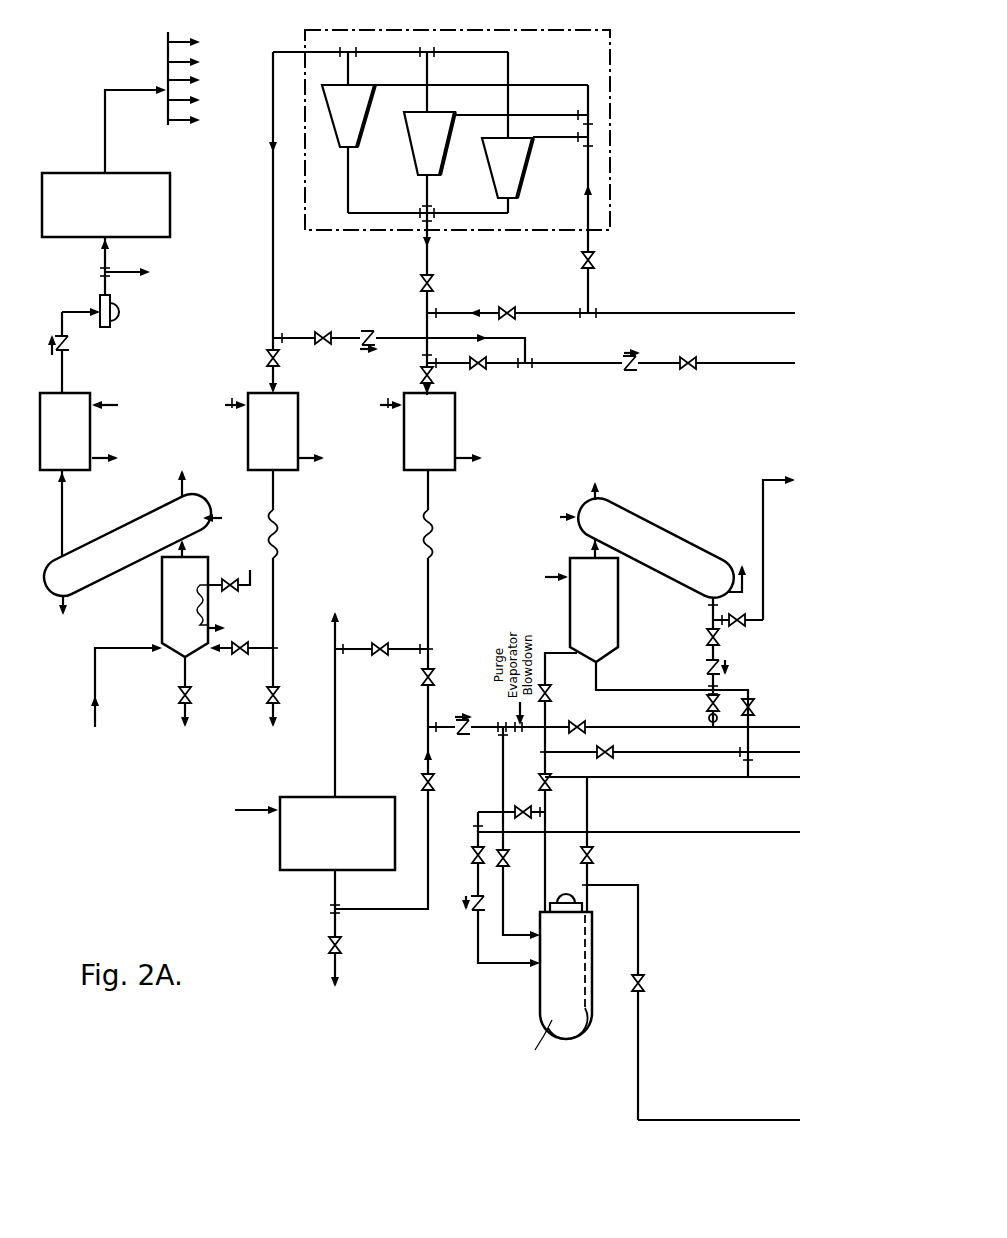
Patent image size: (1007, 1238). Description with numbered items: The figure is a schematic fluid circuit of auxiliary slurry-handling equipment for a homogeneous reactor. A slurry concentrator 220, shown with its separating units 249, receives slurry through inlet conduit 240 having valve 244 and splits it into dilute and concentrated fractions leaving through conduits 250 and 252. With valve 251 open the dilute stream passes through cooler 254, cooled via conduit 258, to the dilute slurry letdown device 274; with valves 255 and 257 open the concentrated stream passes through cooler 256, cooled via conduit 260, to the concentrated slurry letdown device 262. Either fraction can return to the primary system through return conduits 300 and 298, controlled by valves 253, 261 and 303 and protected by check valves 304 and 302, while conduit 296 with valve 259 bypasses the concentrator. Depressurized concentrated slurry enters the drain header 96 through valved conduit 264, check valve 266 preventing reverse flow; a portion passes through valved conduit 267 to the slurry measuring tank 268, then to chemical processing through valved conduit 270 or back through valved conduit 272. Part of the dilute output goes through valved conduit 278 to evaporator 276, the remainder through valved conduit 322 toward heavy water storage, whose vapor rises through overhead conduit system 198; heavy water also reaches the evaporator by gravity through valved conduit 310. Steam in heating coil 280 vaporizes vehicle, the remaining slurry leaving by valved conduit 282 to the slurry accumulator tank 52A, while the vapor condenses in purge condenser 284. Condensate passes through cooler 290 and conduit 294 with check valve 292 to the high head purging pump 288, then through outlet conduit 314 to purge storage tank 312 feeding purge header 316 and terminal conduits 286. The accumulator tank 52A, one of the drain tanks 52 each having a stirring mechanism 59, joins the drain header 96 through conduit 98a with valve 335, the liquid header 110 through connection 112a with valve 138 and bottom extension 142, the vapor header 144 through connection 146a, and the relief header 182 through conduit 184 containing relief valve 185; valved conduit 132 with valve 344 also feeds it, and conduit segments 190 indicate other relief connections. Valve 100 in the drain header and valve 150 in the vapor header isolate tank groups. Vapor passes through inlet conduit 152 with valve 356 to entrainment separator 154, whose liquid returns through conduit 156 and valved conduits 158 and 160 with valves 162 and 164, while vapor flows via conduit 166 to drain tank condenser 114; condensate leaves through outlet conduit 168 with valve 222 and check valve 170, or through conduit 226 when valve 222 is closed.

The purge header 316 is at (166, 42).
The terminal conduits 286 is at (185, 60).
The purge storage tank 312 is at (170, 186).
The outlet conduit 314 is at (104, 266).
The conduit segments 190 is at (110, 272).
The high head purging pump 288 is at (119, 322).
The check valve 292 is at (70, 343).
The conduit 294 is at (64, 297).
The cooler 290 is at (92, 437).
The purge condenser 284 is at (100, 540).
The evaporator 276 is at (162, 597).
The heating coil 280 is at (240, 589).
The valved conduit 278 is at (262, 652).
The valved conduit 282 is at (184, 671).
The valved conduit 310 is at (95, 672).
The valved conduit 322 is at (276, 664).
The overhead conduit system 198 is at (286, 755).
The slurry concentrator 220 is at (610, 74).
The evaporator stage 249 is at (427, 132).
The valved conduit 240 is at (590, 216).
The conduit 250 is at (274, 270).
The conduit 252 is at (425, 262).
The valve 255 is at (433, 282).
The valve 244 is at (595, 260).
The valve 259 is at (506, 307).
The conduit 296 is at (533, 316).
The valve 253 is at (323, 331).
The return conduit 300 is at (320, 330).
The check valve 304 is at (370, 334).
The valve 251 is at (268, 358).
The valve 257 is at (424, 374).
The valve 261 is at (478, 375).
The return conduit 298 is at (581, 366).
The valve 303 is at (688, 358).
The check valve 302 is at (635, 372).
The cooling water conduit 258 is at (297, 395).
The cooler 254 is at (299, 410).
The cooling water conduit 260 is at (302, 457).
The cooler 256 is at (456, 408).
The dilute slurry letdown device 274 is at (309, 568).
The concentrated slurry letdown device 262 is at (426, 517).
The conduit 226 is at (754, 540).
The drain tank condenser 114 is at (647, 540).
The conduit 166 is at (593, 551).
The slurry entrainment separator 154 is at (570, 599).
The valved outlet conduit 168 is at (712, 606).
The valve 222 is at (706, 638).
The check valve 170 is at (705, 668).
The valve 162 is at (706, 703).
The valve 164 is at (752, 705).
The valved conduit 158 is at (707, 719).
The drain header 96 is at (778, 719).
The valved conduit 160 is at (751, 733).
The vapor header 144 is at (800, 755).
The liquid header 110 is at (750, 778).
The valve 100 is at (580, 724).
The valve 150 is at (598, 752).
The vapor conduit connection 146a is at (548, 777).
The relief header 182 is at (752, 832).
The valve 356 is at (551, 694).
The valved inlet conduit 152 is at (545, 680).
The conduit 156 is at (598, 684).
The valved conduit 264 is at (432, 675).
The valved conduit 267 is at (337, 716).
The valved conduit 272 is at (426, 743).
The check valve 266 is at (455, 733).
The valved conduit 98a is at (502, 746).
The conduit 184 is at (490, 812).
The relief valve 185 is at (523, 806).
The valve 335 is at (512, 862).
The stirring mechanism 59 is at (566, 893).
The valve 138 is at (593, 856).
The conduit connection 112a is at (591, 874).
The conduit extension 142 is at (588, 960).
The slurry accumulator tank 52A is at (540, 968).
The drain tank 52 is at (540, 1002).
The valve 344 is at (645, 984).
The valved conduit 132 is at (771, 1120).
The slurry measuring tank 268 is at (340, 797).
The valved conduit 270 is at (338, 969).